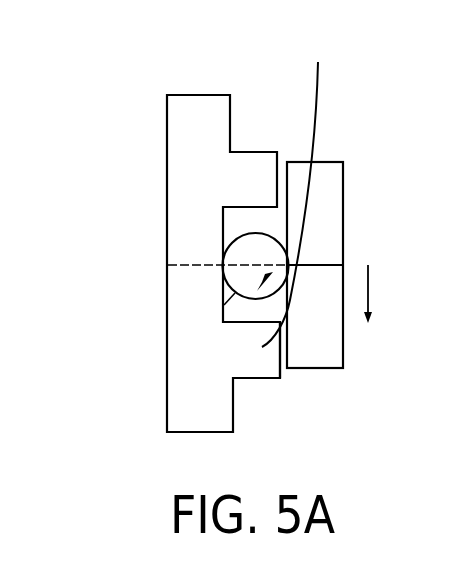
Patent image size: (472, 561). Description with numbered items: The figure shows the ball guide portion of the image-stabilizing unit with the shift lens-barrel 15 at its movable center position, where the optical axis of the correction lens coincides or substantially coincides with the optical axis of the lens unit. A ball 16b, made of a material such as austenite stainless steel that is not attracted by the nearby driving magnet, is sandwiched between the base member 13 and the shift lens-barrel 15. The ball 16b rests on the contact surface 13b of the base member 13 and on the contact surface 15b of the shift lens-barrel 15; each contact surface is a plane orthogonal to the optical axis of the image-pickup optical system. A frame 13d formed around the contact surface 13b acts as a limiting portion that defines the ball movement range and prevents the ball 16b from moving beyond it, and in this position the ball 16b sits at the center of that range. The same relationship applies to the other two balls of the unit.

The base member 13 is at (167, 148).
The contact surface 13b is at (255, 206).
The frame 13d is at (255, 167).
The shift lens-barrel 15 is at (343, 171).
The contact surface 15b is at (280, 380).
The ball 16b is at (223, 310).